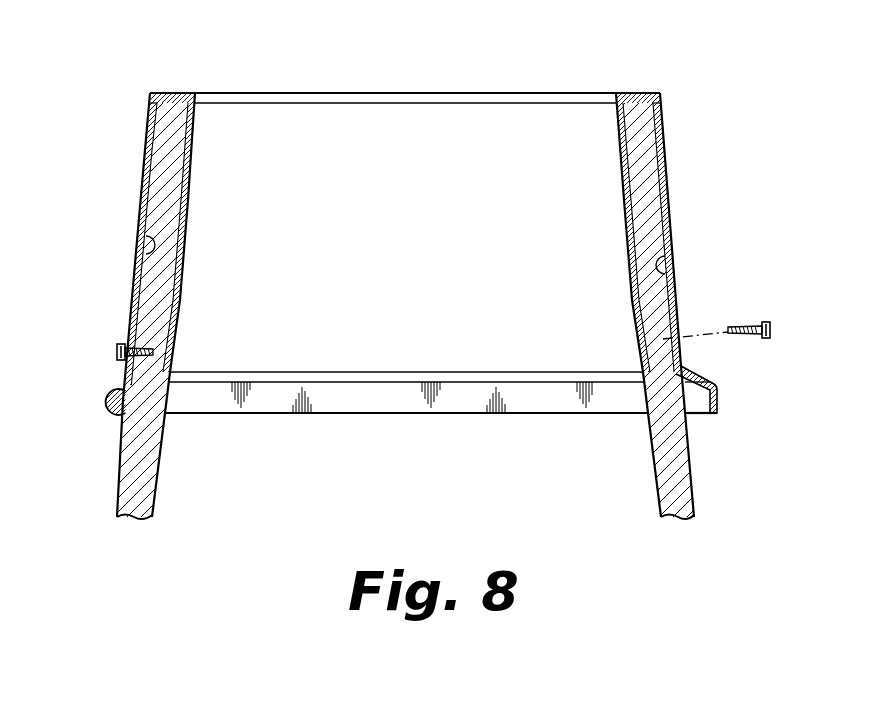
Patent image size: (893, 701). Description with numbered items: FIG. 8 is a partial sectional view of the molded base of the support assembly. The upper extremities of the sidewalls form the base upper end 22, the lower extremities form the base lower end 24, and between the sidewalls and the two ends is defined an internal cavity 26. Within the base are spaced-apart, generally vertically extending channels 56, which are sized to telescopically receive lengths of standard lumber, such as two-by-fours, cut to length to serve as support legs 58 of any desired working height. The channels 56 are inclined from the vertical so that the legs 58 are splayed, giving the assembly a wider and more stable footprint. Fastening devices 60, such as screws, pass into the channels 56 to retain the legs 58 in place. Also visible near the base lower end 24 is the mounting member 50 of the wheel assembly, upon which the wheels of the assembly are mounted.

The base upper end 22 is at (169, 90).
The base lower end 24 is at (716, 414).
The internal cavity 26 is at (579, 128).
The mounting member 50 is at (103, 392).
The channels 56 is at (137, 259).
The support legs 58 is at (119, 480).
The fastening devices 60 is at (118, 349).